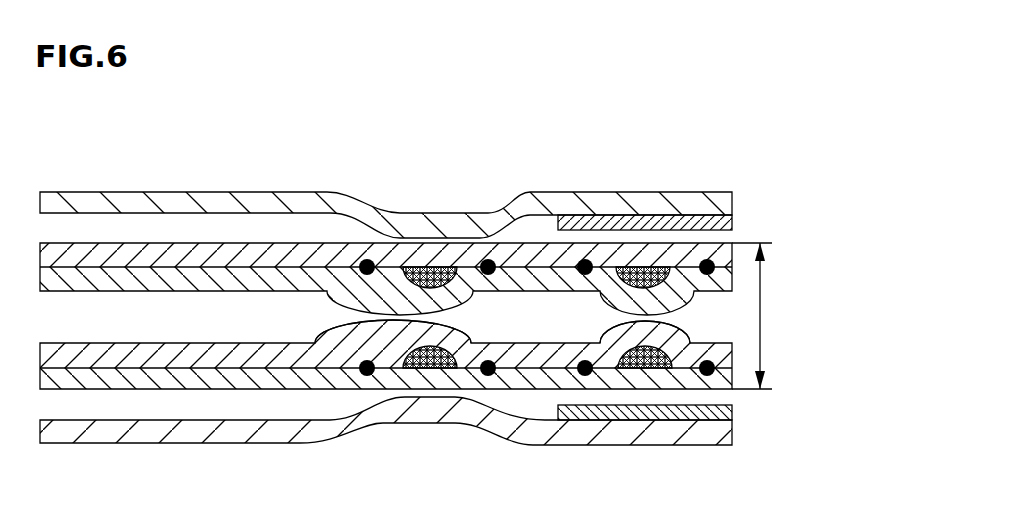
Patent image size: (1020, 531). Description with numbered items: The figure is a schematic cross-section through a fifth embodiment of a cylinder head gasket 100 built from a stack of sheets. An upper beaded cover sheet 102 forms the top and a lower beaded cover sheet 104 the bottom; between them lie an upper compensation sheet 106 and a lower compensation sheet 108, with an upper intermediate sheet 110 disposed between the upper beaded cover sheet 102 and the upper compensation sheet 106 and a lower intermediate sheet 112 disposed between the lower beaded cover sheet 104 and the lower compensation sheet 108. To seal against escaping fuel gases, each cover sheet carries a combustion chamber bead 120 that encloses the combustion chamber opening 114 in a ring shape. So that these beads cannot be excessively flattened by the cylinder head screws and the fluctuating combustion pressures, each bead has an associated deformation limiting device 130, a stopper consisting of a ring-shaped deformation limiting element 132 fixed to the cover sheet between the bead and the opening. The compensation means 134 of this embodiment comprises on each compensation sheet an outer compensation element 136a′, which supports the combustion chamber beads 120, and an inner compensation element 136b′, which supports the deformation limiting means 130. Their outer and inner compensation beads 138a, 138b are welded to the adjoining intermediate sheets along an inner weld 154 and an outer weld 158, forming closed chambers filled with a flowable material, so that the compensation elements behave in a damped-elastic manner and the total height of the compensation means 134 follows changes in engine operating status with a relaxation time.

The cylinder head gasket 100 is at (96, 170).
The upper beaded cover sheet 102 is at (53, 200).
The lower beaded cover sheet 104 is at (73, 432).
The upper compensation sheet 106 is at (150, 280).
The lower compensation sheet 108 is at (128, 352).
The upper intermediate sheet 110 is at (199, 139).
The lower intermediate sheet 112 is at (220, 375).
The combustion chamber opening 114 is at (848, 351).
The combustion chamber bead 120 is at (453, 198).
The deformation limiting device 130 is at (742, 180).
The deformation limiting element 132 is at (722, 226).
The compensation means 134 is at (320, 355).
The outer compensation element 136a′ is at (412, 250).
The inner compensation element 136b′ is at (658, 248).
The outer compensation bead 138a is at (370, 333).
The inner compensation bead 138b is at (680, 333).
The inner weld 154 is at (490, 258).
The outer weld 158 is at (368, 256).